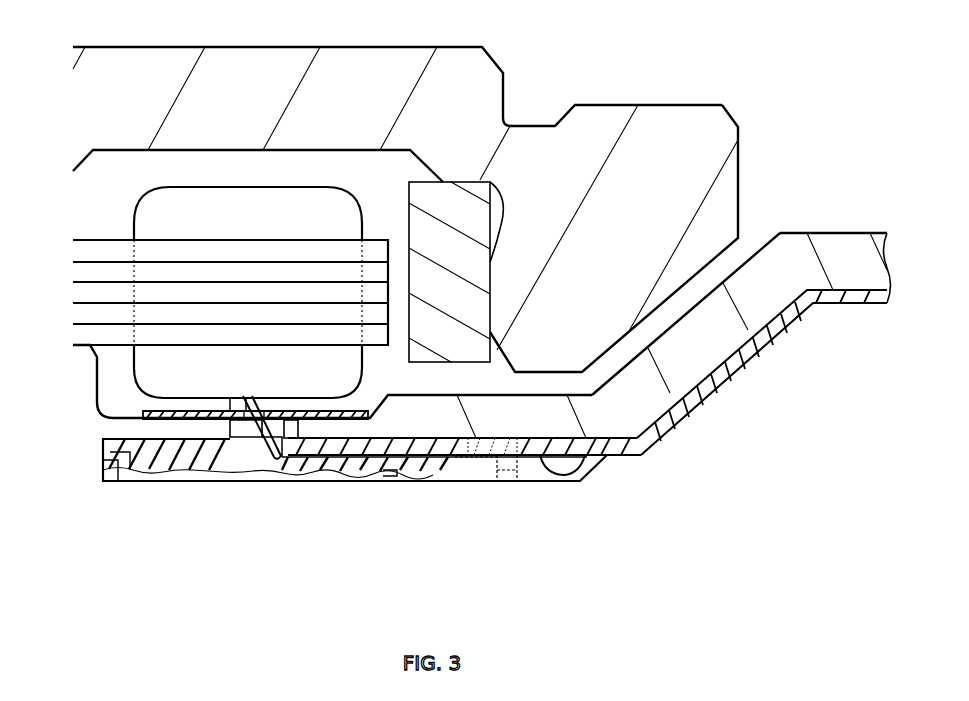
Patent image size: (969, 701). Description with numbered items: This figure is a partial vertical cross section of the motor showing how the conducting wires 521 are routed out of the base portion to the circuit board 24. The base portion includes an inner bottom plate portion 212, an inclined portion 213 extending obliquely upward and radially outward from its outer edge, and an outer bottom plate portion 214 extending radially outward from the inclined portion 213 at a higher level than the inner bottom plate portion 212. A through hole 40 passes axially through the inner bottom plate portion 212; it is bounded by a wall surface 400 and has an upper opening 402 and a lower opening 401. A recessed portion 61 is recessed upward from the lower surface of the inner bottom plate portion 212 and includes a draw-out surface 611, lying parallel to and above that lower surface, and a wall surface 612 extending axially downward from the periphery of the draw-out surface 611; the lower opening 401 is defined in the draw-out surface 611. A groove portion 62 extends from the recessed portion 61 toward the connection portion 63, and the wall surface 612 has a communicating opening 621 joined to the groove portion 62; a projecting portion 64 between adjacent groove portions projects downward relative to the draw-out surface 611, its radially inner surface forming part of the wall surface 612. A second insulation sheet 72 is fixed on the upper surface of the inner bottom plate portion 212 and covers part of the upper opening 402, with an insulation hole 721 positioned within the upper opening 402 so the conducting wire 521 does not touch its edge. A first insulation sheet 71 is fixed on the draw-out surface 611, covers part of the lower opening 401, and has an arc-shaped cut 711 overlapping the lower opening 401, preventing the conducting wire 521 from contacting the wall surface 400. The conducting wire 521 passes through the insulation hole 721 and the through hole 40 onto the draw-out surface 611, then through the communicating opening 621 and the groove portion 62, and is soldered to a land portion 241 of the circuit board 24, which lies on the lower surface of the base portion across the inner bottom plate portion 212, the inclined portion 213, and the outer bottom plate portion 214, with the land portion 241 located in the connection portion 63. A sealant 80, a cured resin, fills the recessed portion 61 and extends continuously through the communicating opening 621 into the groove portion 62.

The inner bottom plate portion 212 is at (490, 413).
The inclined portion 213 is at (710, 342).
The outer bottom plate portion 214 is at (845, 256).
The circuit board 24 is at (667, 413).
The land portion 241 is at (585, 462).
The first insulation sheet 71 is at (335, 447).
The cut 711 is at (298, 452).
The second insulation sheet 72 is at (150, 417).
The insulation hole 721 is at (261, 406).
The through hole 40 is at (253, 458).
The wall surface 400 is at (283, 462).
The lower opening 401 is at (234, 450).
The upper opening 402 is at (238, 410).
The sealant 80 is at (263, 462).
The recessed portion 61 is at (178, 481).
The draw-out surface 611 is at (117, 468).
The wall surface 612 is at (121, 483).
The groove portion 62 is at (460, 467).
The communicating opening 621 is at (391, 477).
The connection portion 63 is at (538, 468).
The projecting portion 64 is at (478, 472).
The conducting wire 521 is at (510, 458).